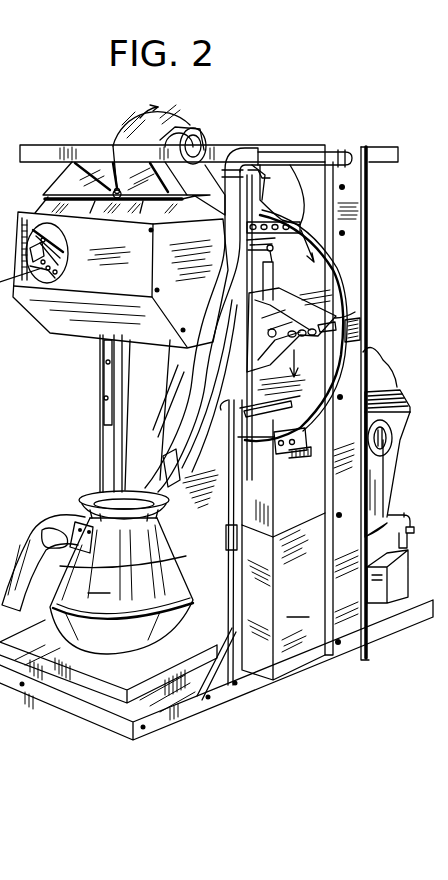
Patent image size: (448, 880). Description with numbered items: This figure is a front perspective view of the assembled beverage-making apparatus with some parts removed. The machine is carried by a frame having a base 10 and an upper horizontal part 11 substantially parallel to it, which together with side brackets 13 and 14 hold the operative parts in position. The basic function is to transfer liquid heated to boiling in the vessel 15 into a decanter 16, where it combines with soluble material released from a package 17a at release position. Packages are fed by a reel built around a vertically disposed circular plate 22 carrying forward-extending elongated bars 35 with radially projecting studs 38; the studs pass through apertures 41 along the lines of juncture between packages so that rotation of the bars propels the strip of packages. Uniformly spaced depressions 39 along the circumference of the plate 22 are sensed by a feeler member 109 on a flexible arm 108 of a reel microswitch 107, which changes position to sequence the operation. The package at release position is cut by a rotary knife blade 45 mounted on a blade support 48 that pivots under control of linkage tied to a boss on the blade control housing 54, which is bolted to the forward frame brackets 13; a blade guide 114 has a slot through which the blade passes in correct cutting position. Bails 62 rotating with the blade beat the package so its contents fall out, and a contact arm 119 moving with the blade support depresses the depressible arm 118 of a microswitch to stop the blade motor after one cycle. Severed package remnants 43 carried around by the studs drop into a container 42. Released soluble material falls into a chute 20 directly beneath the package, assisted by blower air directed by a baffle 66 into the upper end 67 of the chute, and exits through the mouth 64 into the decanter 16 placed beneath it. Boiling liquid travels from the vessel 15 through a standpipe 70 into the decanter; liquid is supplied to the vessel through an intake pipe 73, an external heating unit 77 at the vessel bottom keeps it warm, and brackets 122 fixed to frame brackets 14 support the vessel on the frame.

The base 10 is at (222, 690).
The upper horizontal part 11 is at (55, 150).
The side bracket 13 is at (235, 590).
The side bracket 14 is at (331, 205).
The vessel 15 is at (388, 377).
The decanter 16 is at (97, 584).
The package at release position 17a is at (262, 220).
The chute 20 is at (130, 447).
The circular plate 22 is at (352, 284).
The elongated bars 35 is at (304, 227).
The studs 38 is at (347, 330).
The depressions 39 is at (324, 243).
The apertures 41 is at (291, 341).
The container 42 is at (283, 540).
The package remnants 43 is at (307, 303).
The rotary knife blade 45 is at (170, 98).
The blade support 48 is at (177, 130).
The blade control housing 54 is at (95, 318).
The bails 62 is at (197, 137).
The mouth 64 is at (95, 495).
The baffle 66 is at (292, 172).
The upper end of chute 67 is at (272, 262).
The standpipe 70 is at (316, 160).
The intake pipe 73 is at (414, 530).
The external heating unit 77 is at (370, 582).
The reel microswitch 107 is at (286, 455).
The flexible arm 108 is at (274, 447).
The feeler member 109 is at (232, 432).
The blade guide 114 is at (261, 172).
The depressible arm 118 is at (62, 263).
The contact arm 119 is at (62, 242).
The brackets 122 is at (392, 430).